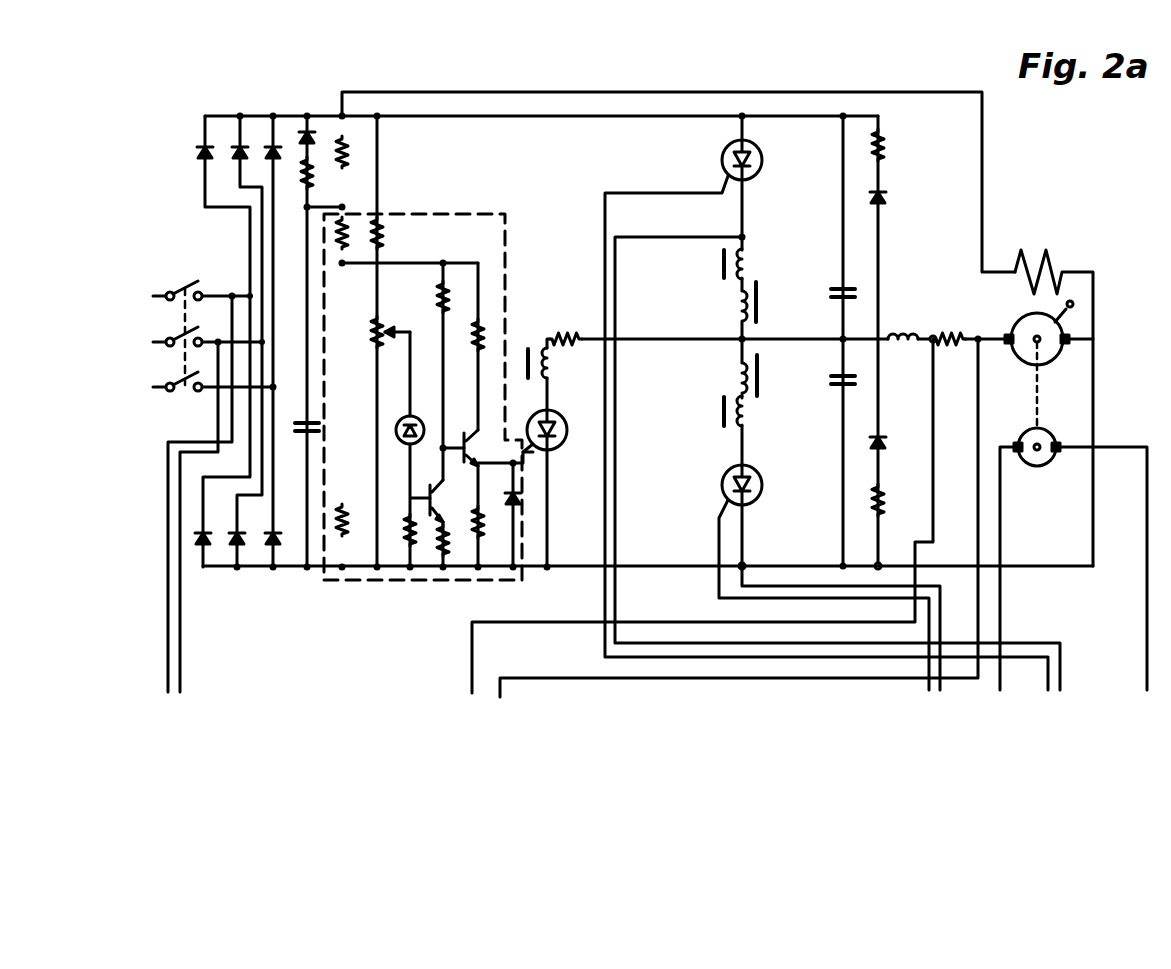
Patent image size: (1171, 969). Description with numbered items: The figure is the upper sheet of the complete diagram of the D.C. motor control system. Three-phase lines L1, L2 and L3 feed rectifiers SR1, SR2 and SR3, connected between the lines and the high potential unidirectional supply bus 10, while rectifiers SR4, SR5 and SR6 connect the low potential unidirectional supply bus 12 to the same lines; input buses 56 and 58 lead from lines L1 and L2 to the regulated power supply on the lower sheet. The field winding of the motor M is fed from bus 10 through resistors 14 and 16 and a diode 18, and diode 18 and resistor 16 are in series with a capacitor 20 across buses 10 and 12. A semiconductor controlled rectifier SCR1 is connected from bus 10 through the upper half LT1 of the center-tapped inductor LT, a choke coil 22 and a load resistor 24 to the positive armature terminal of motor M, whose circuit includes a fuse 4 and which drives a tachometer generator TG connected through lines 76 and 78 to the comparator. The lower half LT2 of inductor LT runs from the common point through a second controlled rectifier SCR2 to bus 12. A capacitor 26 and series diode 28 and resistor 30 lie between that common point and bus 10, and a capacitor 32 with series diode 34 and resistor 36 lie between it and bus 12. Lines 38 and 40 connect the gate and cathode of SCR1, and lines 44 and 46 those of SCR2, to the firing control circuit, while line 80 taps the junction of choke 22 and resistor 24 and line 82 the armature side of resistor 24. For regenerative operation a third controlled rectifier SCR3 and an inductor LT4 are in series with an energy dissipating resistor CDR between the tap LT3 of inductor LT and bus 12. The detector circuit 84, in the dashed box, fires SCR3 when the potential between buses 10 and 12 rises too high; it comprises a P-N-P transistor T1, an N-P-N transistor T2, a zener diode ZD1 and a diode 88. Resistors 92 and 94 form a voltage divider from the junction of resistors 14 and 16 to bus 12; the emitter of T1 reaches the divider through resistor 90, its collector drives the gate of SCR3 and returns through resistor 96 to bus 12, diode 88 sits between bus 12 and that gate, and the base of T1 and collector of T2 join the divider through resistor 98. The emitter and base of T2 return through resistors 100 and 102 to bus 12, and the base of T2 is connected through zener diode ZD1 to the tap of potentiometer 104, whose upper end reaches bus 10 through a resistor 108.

The high potential unidirectional supply bus 10 is at (476, 117).
The fuse 4 is at (1052, 258).
The low potential unidirectional supply bus 12 is at (590, 567).
The rectifier SR1 is at (192, 168).
The rectifier SR2 is at (228, 168).
The rectifier SR3 is at (264, 160).
The rectifier SR4 is at (212, 535).
The rectifier SR5 is at (246, 533).
The rectifier SR6 is at (280, 532).
The diode 18 is at (302, 140).
The resistor 16 is at (301, 181).
The resistor 14 is at (349, 150).
The capacitor 20 is at (301, 423).
The detector circuit 84 is at (505, 213).
The voltage divider resistor 92 is at (348, 232).
The resistor 108 is at (385, 236).
The resistor 98 is at (436, 298).
The resistor 90 is at (471, 340).
The potentiometer 104 is at (370, 322).
The voltage divider resistor 94 is at (348, 522).
The resistor 102 is at (404, 524).
The resistor 100 is at (448, 540).
The resistor 96 is at (484, 522).
The diode 88 is at (508, 498).
The zener diode ZD1 is at (400, 438).
The P-N-P type transistor T1 is at (470, 446).
The N-P-N type transistor T2 is at (436, 500).
The semiconductor controlled rectifier SCR3 is at (554, 448).
The energy dissipating resistor CDR is at (567, 328).
The inductor LT4 is at (552, 362).
The line 38 is at (603, 230).
The line 40 is at (617, 260).
The semiconductor controlled rectifier SCR1 is at (722, 160).
The semiconductor controlled rectifier SCR2 is at (722, 487).
The line 44 is at (719, 598).
The line 46 is at (776, 588).
The upper half of center-tapped inductor LT1 is at (752, 268).
The inductor center tap LT3 is at (736, 343).
The center-tapped inductor LT is at (792, 296).
The lower half of inductor winding LT2 is at (752, 403).
The capacitor 26 is at (832, 292).
The capacitor 32 is at (832, 381).
The resistor 30 is at (886, 145).
The diode 28 is at (888, 198).
The diode 34 is at (888, 444).
The resistor 36 is at (886, 500).
The choke coil 22 is at (908, 346).
The load resistor 24 is at (950, 330).
The line 80 is at (933, 398).
The line 82 is at (978, 408).
The line 76 is at (1000, 618).
The line 78 is at (1147, 615).
The motor M is at (1039, 362).
The tachometer generator TG is at (1041, 468).
The phase supply line L1 is at (160, 293).
The phase supply line L2 is at (160, 339).
The phase supply line L3 is at (160, 384).
The input bus 56 is at (168, 606).
The input bus 58 is at (180, 618).